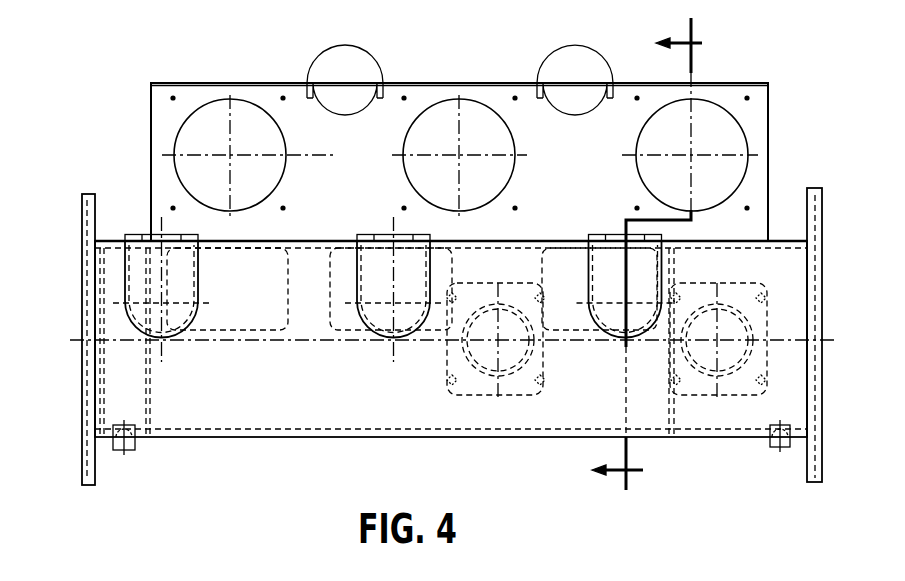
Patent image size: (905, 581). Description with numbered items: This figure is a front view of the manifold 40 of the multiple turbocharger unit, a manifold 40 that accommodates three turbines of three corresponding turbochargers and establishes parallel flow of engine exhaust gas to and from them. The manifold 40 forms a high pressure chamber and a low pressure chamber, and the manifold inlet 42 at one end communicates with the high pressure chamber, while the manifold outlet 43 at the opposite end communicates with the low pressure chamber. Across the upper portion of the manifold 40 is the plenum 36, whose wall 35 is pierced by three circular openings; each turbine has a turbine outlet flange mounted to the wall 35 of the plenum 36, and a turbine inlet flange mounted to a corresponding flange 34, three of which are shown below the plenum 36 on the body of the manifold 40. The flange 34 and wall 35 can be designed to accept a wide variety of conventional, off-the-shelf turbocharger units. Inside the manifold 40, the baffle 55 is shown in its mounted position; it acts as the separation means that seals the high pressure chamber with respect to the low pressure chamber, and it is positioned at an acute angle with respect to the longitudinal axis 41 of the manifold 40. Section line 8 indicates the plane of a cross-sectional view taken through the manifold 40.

The section line 8- 8 is at (656, 262).
The flange 34 is at (140, 234).
The wall 35 is at (375, 170).
The plenum 36 is at (151, 122).
The manifold 40 is at (215, 437).
The longitudinal axis 41 is at (318, 341).
The manifold inlet 42 is at (822, 395).
The manifold outlet 43 is at (82, 394).
The baffle 55 is at (287, 397).